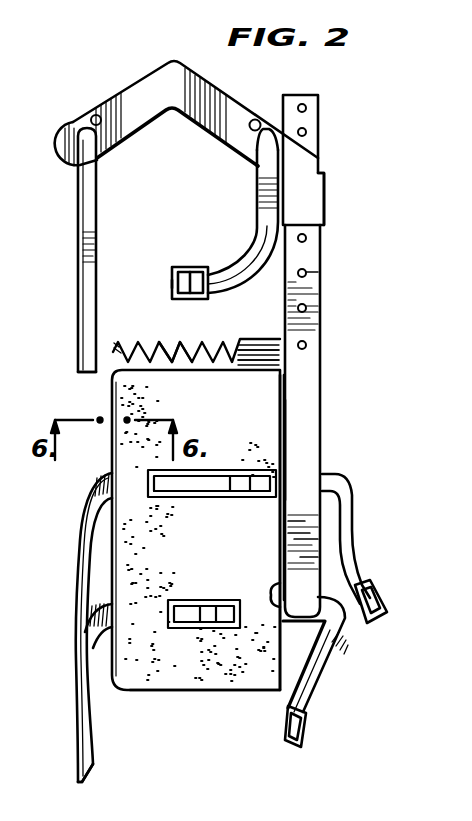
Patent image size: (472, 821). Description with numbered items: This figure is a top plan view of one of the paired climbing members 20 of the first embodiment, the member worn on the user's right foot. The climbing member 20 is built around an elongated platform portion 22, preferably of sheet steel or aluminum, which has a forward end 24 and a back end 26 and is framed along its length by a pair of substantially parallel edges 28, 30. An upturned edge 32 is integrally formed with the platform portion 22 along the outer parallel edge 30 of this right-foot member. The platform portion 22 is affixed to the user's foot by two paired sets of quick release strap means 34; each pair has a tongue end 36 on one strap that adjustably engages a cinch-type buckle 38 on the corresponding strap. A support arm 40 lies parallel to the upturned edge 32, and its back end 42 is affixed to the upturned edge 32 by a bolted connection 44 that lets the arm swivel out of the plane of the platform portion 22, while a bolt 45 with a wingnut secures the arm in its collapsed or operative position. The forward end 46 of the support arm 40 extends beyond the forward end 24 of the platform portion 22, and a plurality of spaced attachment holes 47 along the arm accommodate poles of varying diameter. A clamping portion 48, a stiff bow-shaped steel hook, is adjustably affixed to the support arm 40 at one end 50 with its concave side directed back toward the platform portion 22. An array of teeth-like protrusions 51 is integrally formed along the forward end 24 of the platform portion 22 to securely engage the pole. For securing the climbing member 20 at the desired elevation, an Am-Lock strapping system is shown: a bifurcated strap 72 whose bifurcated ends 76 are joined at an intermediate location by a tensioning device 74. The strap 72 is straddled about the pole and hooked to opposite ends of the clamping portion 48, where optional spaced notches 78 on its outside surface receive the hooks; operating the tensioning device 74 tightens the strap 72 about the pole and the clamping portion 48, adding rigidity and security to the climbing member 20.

The climbing member 20 is at (378, 500).
The platform portion 22 is at (112, 407).
The forward end 24 is at (160, 340).
The back end 26 is at (153, 692).
The parallel edge 28 is at (100, 667).
The outer parallel edge 30 is at (265, 693).
The upturned edge 32 is at (280, 443).
The quick release strap means 34 is at (362, 598).
The tongue end 36 is at (82, 754).
The buckle 38 is at (305, 739).
The support arm 40 is at (302, 397).
The back end 42 is at (305, 578).
The bolted connection 44 is at (272, 593).
The bolt 45 is at (262, 358).
The forward end 46 is at (318, 97).
The attachment holes 47 is at (302, 302).
The clamping portion 48 is at (158, 78).
The end 50 is at (310, 200).
The teeth-like protrusions 51 is at (174, 348).
The bifurcated strap 72 is at (93, 207).
The tensioning device 74 is at (197, 267).
The bifurcated ends 76 is at (172, 284).
The notches 78 is at (94, 114).